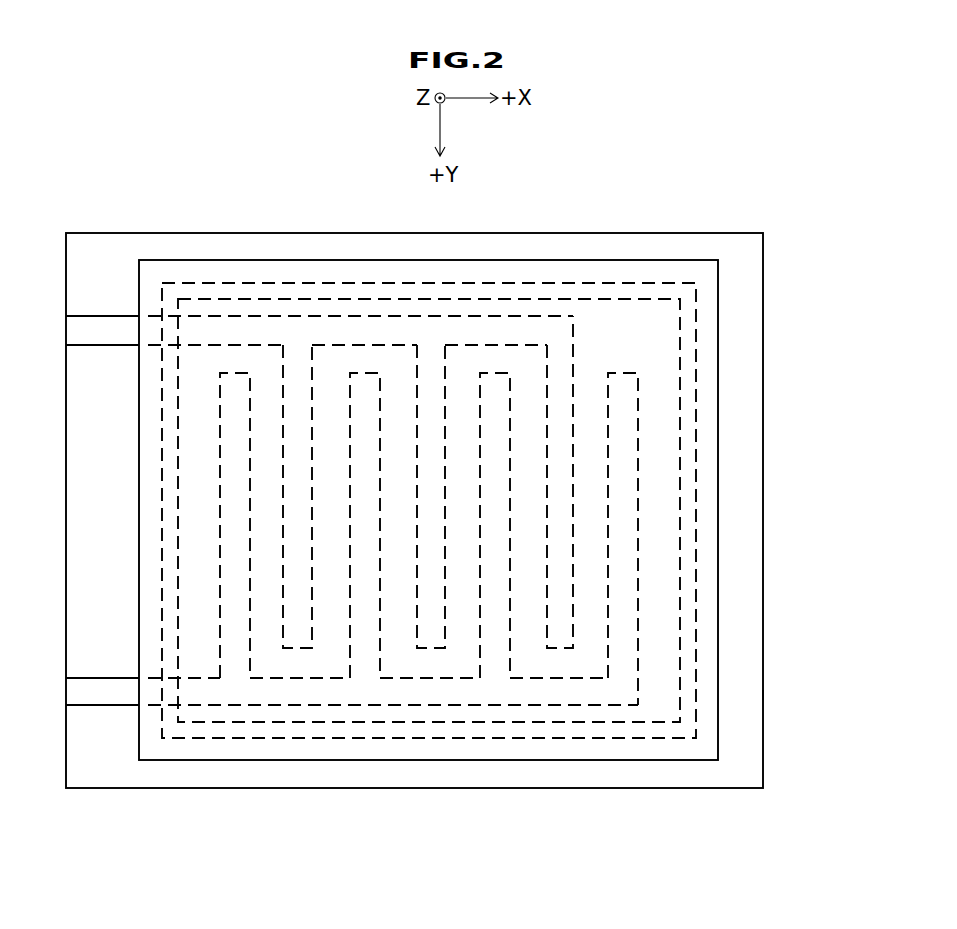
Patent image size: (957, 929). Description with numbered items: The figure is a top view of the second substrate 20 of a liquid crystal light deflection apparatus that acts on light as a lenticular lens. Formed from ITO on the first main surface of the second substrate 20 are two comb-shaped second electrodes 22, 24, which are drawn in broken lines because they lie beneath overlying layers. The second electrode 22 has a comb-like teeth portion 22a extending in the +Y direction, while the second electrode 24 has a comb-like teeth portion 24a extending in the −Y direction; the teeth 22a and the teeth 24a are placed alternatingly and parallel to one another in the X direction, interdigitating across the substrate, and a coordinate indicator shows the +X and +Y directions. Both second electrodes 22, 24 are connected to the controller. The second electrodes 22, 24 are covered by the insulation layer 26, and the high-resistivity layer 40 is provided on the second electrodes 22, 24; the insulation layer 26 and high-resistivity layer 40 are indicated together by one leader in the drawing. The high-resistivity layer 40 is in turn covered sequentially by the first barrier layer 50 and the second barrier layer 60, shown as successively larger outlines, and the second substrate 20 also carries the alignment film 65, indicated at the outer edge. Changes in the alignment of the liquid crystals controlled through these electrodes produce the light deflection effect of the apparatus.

The second substrate 20 is at (763, 408).
The second electrode 22 is at (107, 706).
The comb-like teeth portion 22a is at (235, 373).
The second electrode 24 is at (104, 316).
The comb-like teeth portion 24a is at (297, 648).
The insulation layer 26 is at (512, 510).
The high-resistivity layer 40 is at (680, 550).
The first barrier layer 50 is at (696, 600).
The second barrier layer 60 is at (718, 660).
The alignment film 65 is at (718, 695).